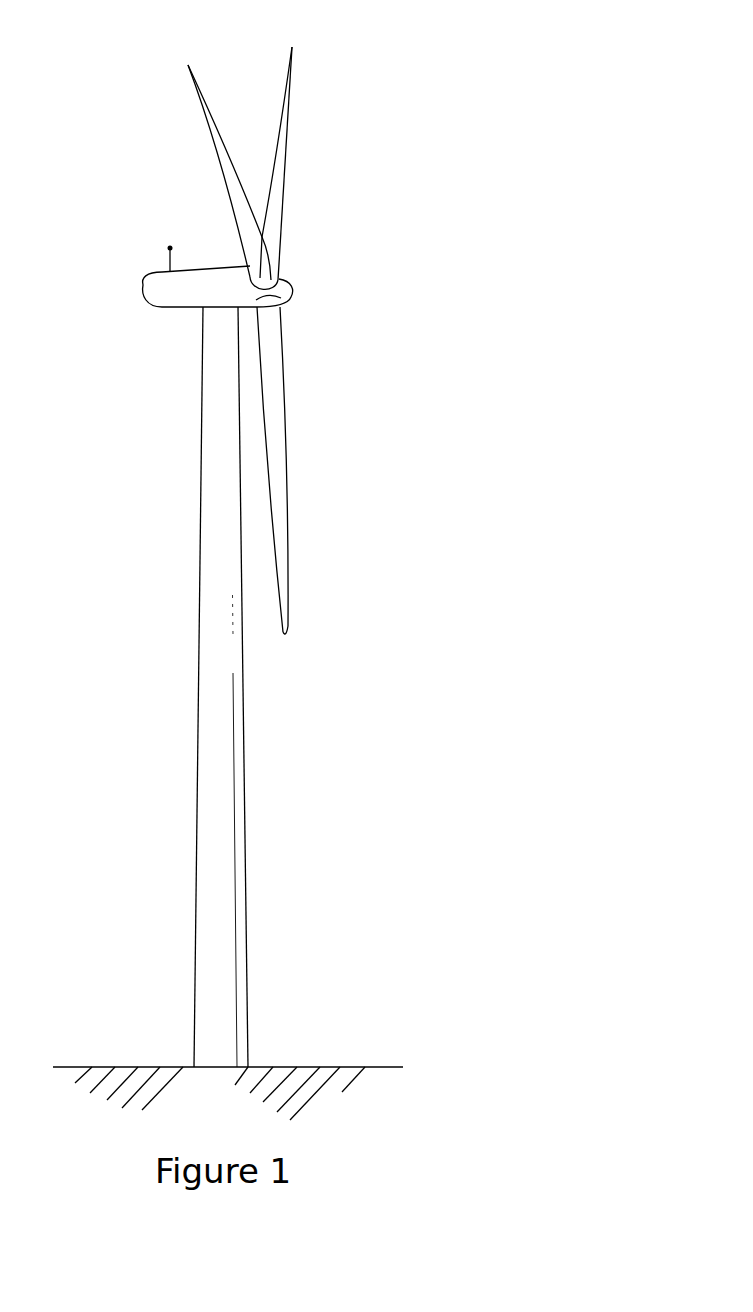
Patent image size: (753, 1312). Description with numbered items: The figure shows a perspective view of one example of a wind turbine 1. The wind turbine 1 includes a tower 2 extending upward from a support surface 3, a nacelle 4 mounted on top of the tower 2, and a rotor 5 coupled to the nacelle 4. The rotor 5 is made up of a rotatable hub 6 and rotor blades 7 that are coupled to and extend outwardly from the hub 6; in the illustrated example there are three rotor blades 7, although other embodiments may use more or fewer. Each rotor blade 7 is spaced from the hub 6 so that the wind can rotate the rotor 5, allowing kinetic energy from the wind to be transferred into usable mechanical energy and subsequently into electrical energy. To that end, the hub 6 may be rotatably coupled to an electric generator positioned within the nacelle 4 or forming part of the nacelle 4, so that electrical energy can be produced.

The wind turbine 1 is at (259, 572).
The tower 2 is at (207, 790).
The support surface 3 is at (128, 1065).
The nacelle 4 is at (180, 308).
The rotor 5 is at (296, 259).
The rotatable hub 6 is at (289, 291).
The rotor blade 7 is at (287, 87).